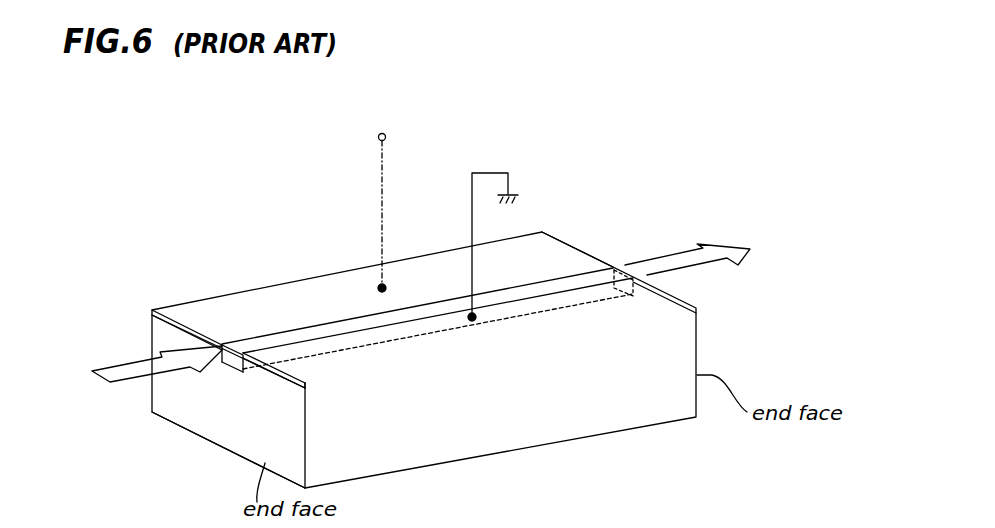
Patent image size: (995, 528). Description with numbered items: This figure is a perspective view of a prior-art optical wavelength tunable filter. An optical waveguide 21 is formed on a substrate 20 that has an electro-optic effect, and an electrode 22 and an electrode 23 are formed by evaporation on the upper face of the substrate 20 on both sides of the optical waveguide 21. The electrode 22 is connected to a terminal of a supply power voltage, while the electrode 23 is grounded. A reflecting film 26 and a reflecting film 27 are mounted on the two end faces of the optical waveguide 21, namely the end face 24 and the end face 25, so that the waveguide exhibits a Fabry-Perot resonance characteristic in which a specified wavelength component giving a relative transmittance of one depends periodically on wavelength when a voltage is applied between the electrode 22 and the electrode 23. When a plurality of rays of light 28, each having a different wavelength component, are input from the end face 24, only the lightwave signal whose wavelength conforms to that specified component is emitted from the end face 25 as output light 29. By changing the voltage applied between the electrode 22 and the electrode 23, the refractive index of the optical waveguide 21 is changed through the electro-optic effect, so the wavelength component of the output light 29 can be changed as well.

The substrate 20 is at (477, 448).
The optical waveguide 21 is at (425, 304).
The electrode 22 is at (270, 296).
The electrode 23 is at (617, 313).
The end face 24 is at (230, 362).
The end face 25 is at (638, 283).
The reflecting film 26 is at (233, 365).
The reflecting film 27 is at (615, 285).
The rays of light 28 is at (122, 372).
The output light 29 is at (725, 251).